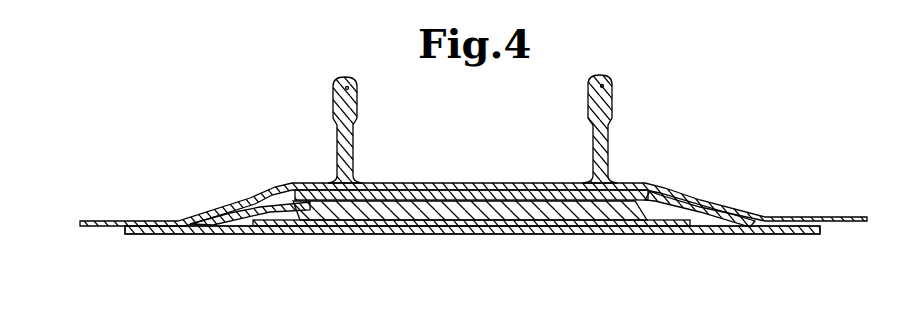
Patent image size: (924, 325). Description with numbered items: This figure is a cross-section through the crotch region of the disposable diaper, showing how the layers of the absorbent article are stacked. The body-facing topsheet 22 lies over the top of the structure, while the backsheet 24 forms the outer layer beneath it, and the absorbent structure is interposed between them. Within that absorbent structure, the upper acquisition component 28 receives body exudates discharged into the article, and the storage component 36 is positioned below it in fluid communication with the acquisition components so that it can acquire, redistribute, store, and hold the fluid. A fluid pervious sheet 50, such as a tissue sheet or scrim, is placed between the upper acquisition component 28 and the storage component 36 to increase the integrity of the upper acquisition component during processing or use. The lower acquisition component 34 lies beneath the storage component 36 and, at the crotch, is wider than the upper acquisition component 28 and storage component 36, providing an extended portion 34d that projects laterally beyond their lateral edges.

The topsheet 22 is at (607, 133).
The backsheet 24 is at (400, 234).
The upper acquisition component 28 is at (440, 189).
The lower acquisition component 34 is at (458, 234).
The extended portion 34d is at (681, 234).
The storage component 36 is at (596, 212).
The fluid pervious sheet 50 is at (718, 204).